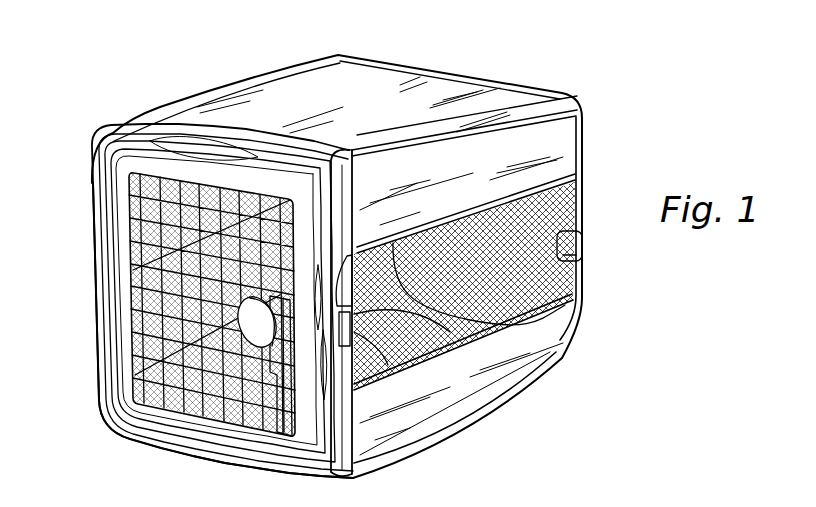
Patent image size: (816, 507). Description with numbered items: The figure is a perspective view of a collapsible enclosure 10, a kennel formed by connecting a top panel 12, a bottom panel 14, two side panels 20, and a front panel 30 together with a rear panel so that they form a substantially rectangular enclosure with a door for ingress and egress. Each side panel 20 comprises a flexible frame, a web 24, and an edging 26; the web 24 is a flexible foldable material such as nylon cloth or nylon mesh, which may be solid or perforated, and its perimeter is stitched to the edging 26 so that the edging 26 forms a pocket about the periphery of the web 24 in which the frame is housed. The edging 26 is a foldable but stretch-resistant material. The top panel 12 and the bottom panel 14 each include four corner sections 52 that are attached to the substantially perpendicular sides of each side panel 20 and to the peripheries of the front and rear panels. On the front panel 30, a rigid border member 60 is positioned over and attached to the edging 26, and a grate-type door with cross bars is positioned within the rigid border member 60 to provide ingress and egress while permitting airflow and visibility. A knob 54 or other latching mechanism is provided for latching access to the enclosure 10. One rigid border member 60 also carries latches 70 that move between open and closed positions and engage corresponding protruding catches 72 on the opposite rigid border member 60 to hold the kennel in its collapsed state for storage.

The collapsible enclosure 10 is at (592, 75).
The top panel 12 is at (466, 88).
The bottom panel 14 is at (437, 440).
The side panel 20 is at (548, 140).
The web 24 is at (560, 330).
The edging 26 is at (546, 370).
The front panel 30 is at (126, 270).
The corner section 52 is at (340, 150).
The knob 54 is at (258, 334).
The rigid border member 60 is at (117, 410).
The latch 70 is at (584, 240).
The protruding catch 72 is at (350, 325).